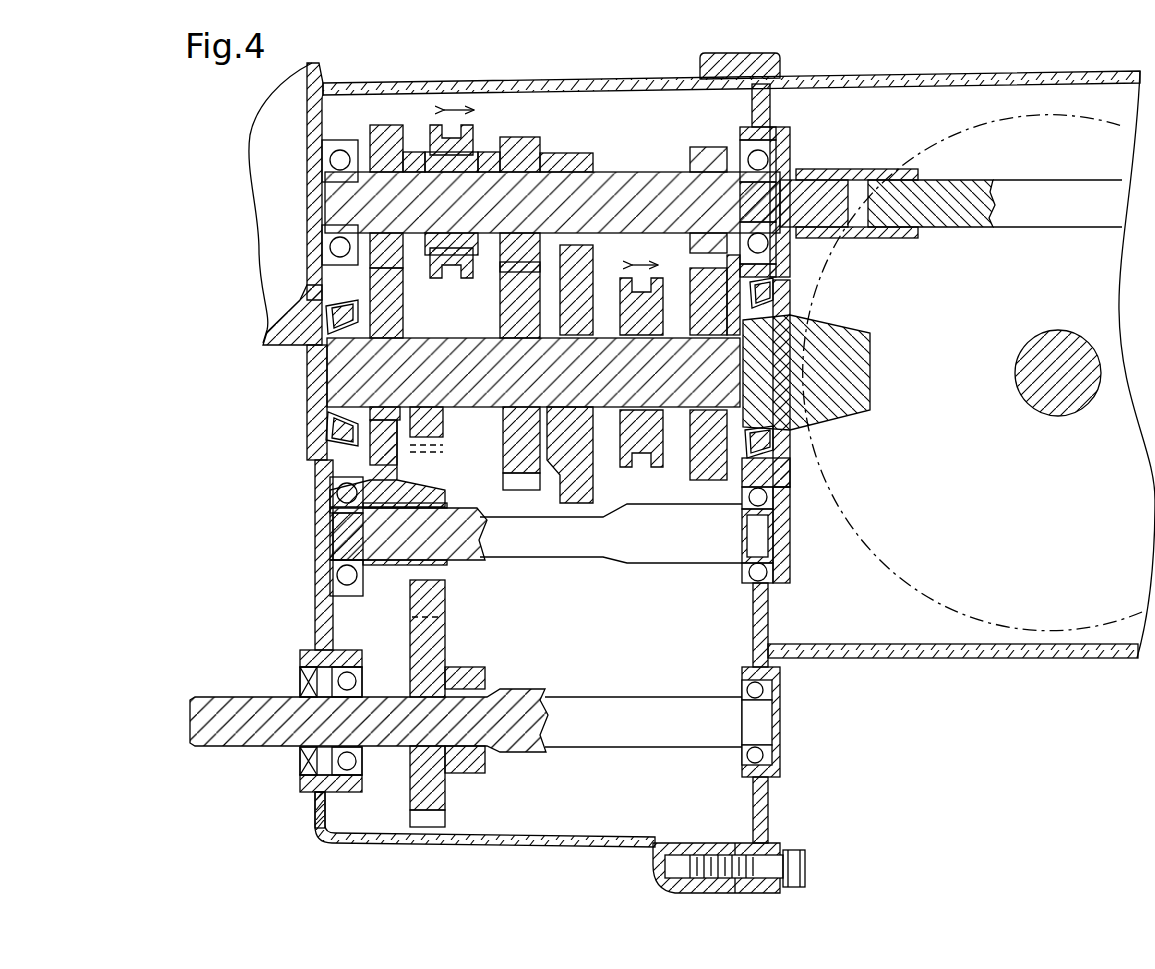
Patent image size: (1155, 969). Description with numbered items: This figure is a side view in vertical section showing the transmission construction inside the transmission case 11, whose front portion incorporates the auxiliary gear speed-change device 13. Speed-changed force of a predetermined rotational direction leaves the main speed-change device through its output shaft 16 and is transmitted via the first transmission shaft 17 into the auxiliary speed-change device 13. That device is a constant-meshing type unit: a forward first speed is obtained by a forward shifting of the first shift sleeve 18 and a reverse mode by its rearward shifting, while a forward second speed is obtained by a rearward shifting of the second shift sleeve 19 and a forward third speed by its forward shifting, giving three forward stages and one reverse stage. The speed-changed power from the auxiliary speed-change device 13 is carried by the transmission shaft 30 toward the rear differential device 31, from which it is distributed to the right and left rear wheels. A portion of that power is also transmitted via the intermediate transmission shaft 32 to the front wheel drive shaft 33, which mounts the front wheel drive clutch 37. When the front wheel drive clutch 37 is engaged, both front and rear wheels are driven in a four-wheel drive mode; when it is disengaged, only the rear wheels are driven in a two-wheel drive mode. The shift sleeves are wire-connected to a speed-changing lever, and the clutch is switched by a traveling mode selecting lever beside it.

The transmission case 11 is at (410, 83).
The auxiliary gear speed-change device 13 is at (580, 128).
The output shaft 16 is at (1075, 220).
The first transmission shaft 17 is at (650, 170).
The first shift sleeve 18 is at (635, 450).
The second shift sleeve 19 is at (443, 267).
The transmission shaft 30 is at (330, 360).
The rear differential device 31 is at (853, 533).
The intermediate transmission shaft 32 is at (575, 540).
The front wheel drive shaft 33 is at (232, 705).
The front wheel drive clutch 37 is at (492, 793).